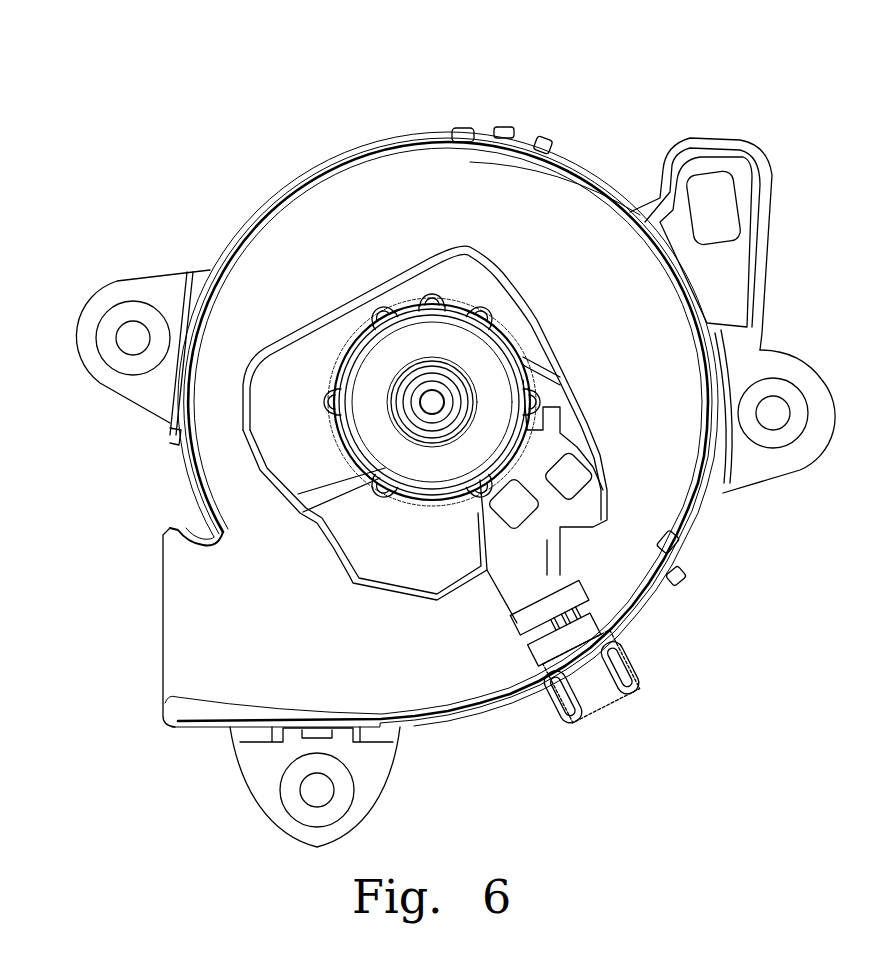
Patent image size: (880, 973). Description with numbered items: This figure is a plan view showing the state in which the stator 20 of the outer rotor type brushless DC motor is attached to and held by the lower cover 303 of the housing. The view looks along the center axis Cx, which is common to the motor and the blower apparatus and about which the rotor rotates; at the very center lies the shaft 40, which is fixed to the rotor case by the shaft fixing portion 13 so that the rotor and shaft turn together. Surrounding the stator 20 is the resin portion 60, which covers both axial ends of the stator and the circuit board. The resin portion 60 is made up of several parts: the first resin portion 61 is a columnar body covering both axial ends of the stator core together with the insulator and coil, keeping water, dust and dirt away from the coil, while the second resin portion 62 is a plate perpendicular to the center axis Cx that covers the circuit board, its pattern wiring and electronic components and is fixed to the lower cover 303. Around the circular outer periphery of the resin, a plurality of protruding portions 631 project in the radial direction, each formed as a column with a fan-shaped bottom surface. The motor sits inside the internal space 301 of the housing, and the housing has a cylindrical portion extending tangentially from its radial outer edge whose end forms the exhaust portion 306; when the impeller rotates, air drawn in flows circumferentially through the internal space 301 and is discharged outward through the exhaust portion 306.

The shaft fixing portion 13 is at (432, 428).
The stator 20 is at (333, 368).
The shaft 40 is at (422, 397).
The resin portion 60 is at (325, 437).
The first resin portion 61 is at (500, 327).
The second resin portion 62 is at (363, 553).
The internal space 301 is at (318, 195).
The lower cover 303 is at (490, 165).
The exhaust portion 306 is at (165, 655).
The protruding portion 631 is at (479, 300).
The center axis Cx is at (437, 400).